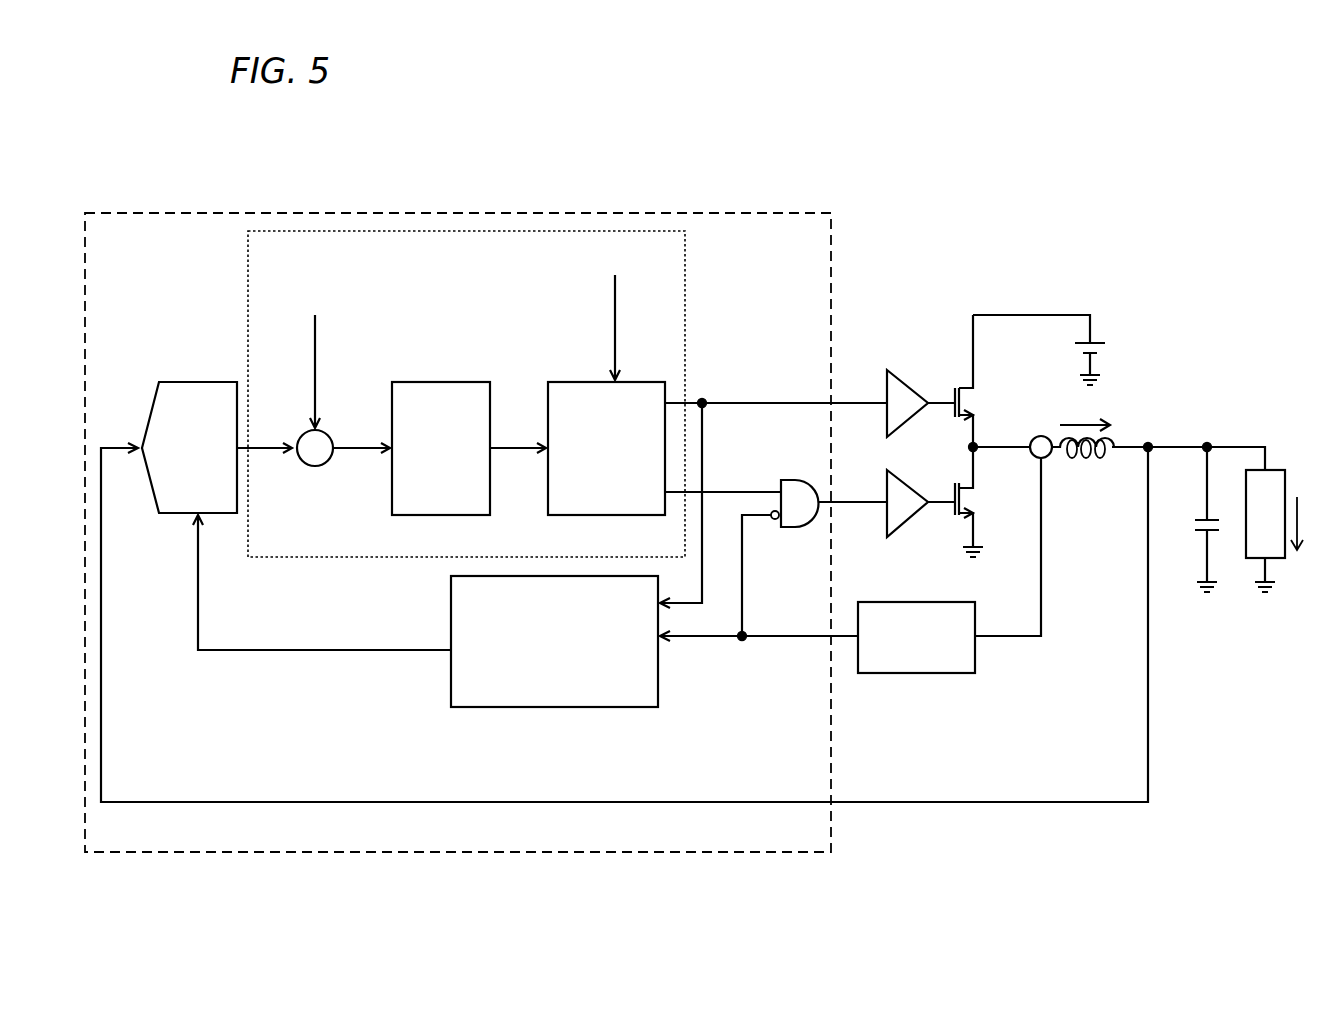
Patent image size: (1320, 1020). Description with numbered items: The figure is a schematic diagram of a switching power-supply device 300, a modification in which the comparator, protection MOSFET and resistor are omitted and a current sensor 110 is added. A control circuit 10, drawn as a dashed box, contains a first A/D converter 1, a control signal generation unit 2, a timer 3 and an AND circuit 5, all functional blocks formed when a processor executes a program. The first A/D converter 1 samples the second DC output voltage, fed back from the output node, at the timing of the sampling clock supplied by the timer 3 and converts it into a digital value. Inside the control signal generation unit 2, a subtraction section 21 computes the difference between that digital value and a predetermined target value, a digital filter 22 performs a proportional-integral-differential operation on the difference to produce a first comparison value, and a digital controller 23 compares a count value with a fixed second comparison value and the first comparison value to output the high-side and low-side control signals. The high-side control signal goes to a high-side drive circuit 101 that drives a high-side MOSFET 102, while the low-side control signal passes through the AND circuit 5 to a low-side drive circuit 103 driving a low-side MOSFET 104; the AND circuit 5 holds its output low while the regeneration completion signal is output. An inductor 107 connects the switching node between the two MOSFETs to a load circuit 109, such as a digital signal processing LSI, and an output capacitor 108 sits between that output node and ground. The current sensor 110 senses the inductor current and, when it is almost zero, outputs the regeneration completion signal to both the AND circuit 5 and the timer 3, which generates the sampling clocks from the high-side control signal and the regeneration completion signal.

The first A/D converter 1 is at (177, 516).
The control signal generation unit 2 is at (686, 310).
The timer 3 is at (450, 690).
The AND circuit 5 is at (795, 478).
The control circuit 10 is at (785, 213).
The subtraction section 21 is at (316, 466).
The digital filter 22 is at (428, 380).
The digital controller 23 is at (632, 380).
The high-side drive circuit 101 is at (893, 368).
The high-side MOSFET 102 is at (950, 388).
The low-side drive circuit 103 is at (900, 540).
The low-side MOSFET 104 is at (958, 525).
The inductor 107 is at (1086, 458).
The output capacitor 108 is at (1200, 532).
The load circuit 109 is at (1285, 475).
The current sensor 110 is at (940, 674).
The switching power-supply device 300 is at (948, 228).